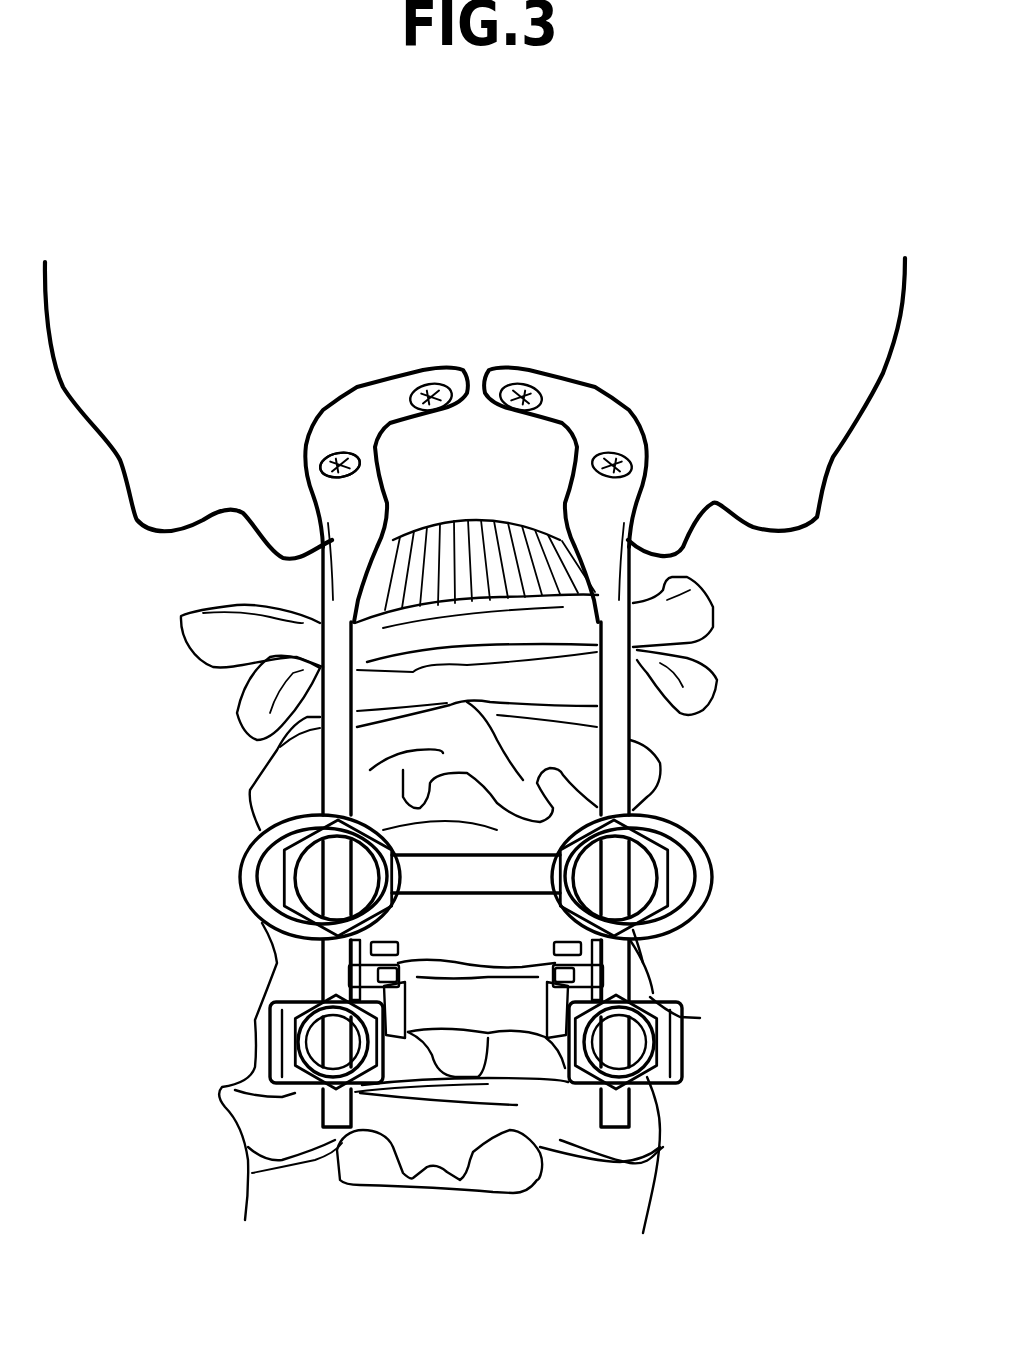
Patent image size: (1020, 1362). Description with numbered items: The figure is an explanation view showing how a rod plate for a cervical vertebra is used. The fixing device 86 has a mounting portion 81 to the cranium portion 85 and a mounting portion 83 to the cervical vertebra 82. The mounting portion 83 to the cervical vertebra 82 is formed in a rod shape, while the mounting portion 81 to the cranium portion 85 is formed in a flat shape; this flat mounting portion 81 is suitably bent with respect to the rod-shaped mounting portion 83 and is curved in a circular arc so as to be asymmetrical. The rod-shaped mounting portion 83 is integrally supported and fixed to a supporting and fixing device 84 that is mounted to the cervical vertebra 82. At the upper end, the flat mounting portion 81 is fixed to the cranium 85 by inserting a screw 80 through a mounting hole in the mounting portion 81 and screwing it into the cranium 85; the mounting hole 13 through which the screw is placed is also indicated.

The bone screw hole 13 is at (322, 468).
The screw 80 is at (428, 384).
The mounting portion to the cranium portion 81 is at (359, 425).
The cervical vertebra 82 is at (465, 1010).
The mounting portion to the cervical vertebra 83 is at (335, 770).
The supporting and fixing device 84 is at (648, 882).
The cranium portion 85 is at (495, 284).
The fixing device 86 is at (645, 712).